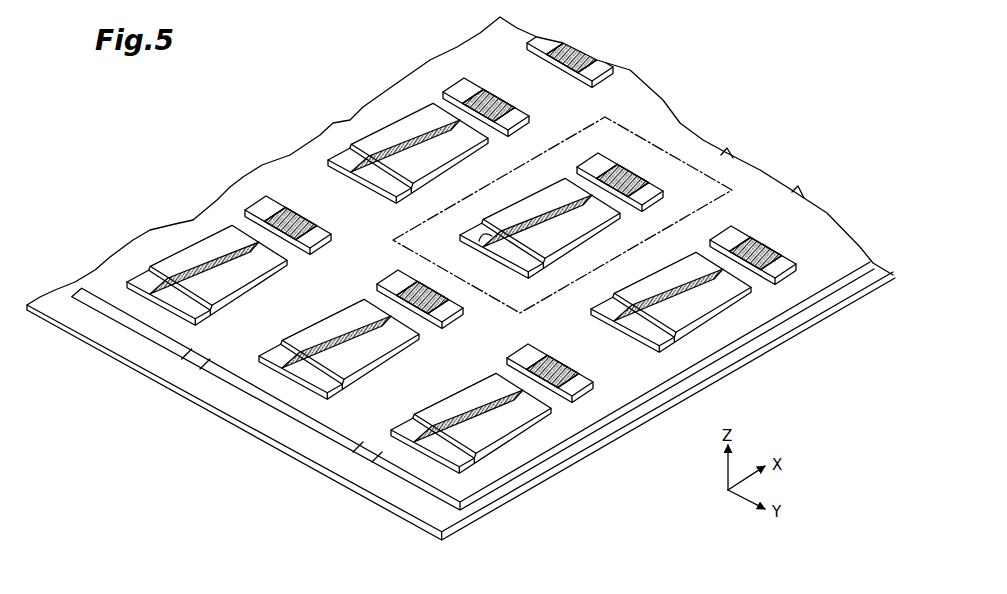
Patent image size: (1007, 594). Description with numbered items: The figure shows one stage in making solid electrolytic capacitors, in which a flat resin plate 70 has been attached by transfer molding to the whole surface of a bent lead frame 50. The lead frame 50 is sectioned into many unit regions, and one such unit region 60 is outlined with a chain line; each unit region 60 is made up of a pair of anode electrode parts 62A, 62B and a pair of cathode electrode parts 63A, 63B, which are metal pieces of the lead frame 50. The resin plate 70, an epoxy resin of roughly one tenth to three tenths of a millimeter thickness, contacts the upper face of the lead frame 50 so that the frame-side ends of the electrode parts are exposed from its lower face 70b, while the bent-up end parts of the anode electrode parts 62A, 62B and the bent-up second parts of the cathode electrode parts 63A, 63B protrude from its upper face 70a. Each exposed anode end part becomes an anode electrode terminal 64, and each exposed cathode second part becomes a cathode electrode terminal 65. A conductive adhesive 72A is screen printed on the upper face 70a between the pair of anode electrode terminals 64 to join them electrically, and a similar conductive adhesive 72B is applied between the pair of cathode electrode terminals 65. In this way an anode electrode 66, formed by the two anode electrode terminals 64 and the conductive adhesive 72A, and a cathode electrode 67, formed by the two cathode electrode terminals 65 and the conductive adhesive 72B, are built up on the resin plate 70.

The lead frame 50 is at (56, 284).
The resin plate 70 is at (108, 255).
The upper face of the resin plate 70a is at (305, 166).
The lower face of the resin plate 70b is at (247, 197).
The unit region 60 is at (666, 110).
The anode electrode part 62A is at (659, 202).
The anode electrode part 62B is at (586, 156).
The anode electrode terminal 64 is at (601, 158).
The anode electrode 66 is at (651, 178).
The conductive adhesive 72A is at (610, 176).
The conductive adhesive 72B is at (485, 243).
The cathode electrode part 63A is at (615, 221).
The cathode electrode part 63B is at (546, 180).
The cathode electrode terminal 65 is at (500, 166).
The cathode electrode 67 is at (484, 217).